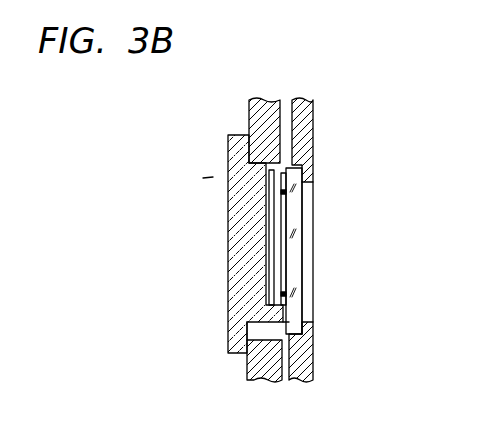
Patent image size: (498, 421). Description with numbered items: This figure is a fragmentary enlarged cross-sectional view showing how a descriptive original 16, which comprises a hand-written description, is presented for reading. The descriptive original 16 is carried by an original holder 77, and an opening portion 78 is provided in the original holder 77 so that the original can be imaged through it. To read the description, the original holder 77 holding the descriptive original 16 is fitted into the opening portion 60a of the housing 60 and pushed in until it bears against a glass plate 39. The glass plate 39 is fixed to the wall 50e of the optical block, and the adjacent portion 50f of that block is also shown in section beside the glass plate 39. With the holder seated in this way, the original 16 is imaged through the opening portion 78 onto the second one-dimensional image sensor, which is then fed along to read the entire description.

The descriptive original 16 is at (268, 188).
The glass plate 39 is at (297, 295).
The wall 50e is at (313, 135).
The frame side wall 50f is at (313, 203).
The housing 60 is at (250, 123).
The opening portion 60a is at (260, 332).
The original holder 77 is at (242, 228).
The opening portion 78 is at (286, 255).